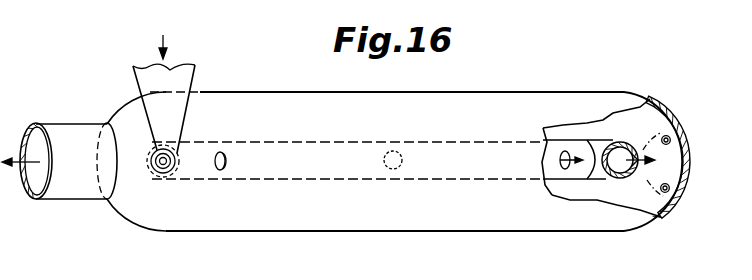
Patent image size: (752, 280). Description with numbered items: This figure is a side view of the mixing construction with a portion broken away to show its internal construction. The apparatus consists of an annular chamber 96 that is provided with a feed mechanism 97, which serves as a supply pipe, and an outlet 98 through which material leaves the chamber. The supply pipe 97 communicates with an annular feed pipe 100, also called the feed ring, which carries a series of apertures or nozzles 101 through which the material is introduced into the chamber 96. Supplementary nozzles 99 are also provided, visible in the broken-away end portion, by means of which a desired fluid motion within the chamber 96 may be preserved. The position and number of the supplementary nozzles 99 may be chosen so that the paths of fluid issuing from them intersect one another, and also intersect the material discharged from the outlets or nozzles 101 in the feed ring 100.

The annular chamber 96 is at (263, 215).
The feed mechanism 97 is at (162, 170).
The outlet 98 is at (65, 137).
The supplementary nozzles 99 is at (703, 184).
The annular feed pipe 100 is at (575, 148).
The apertures or nozzles 101 is at (393, 169).